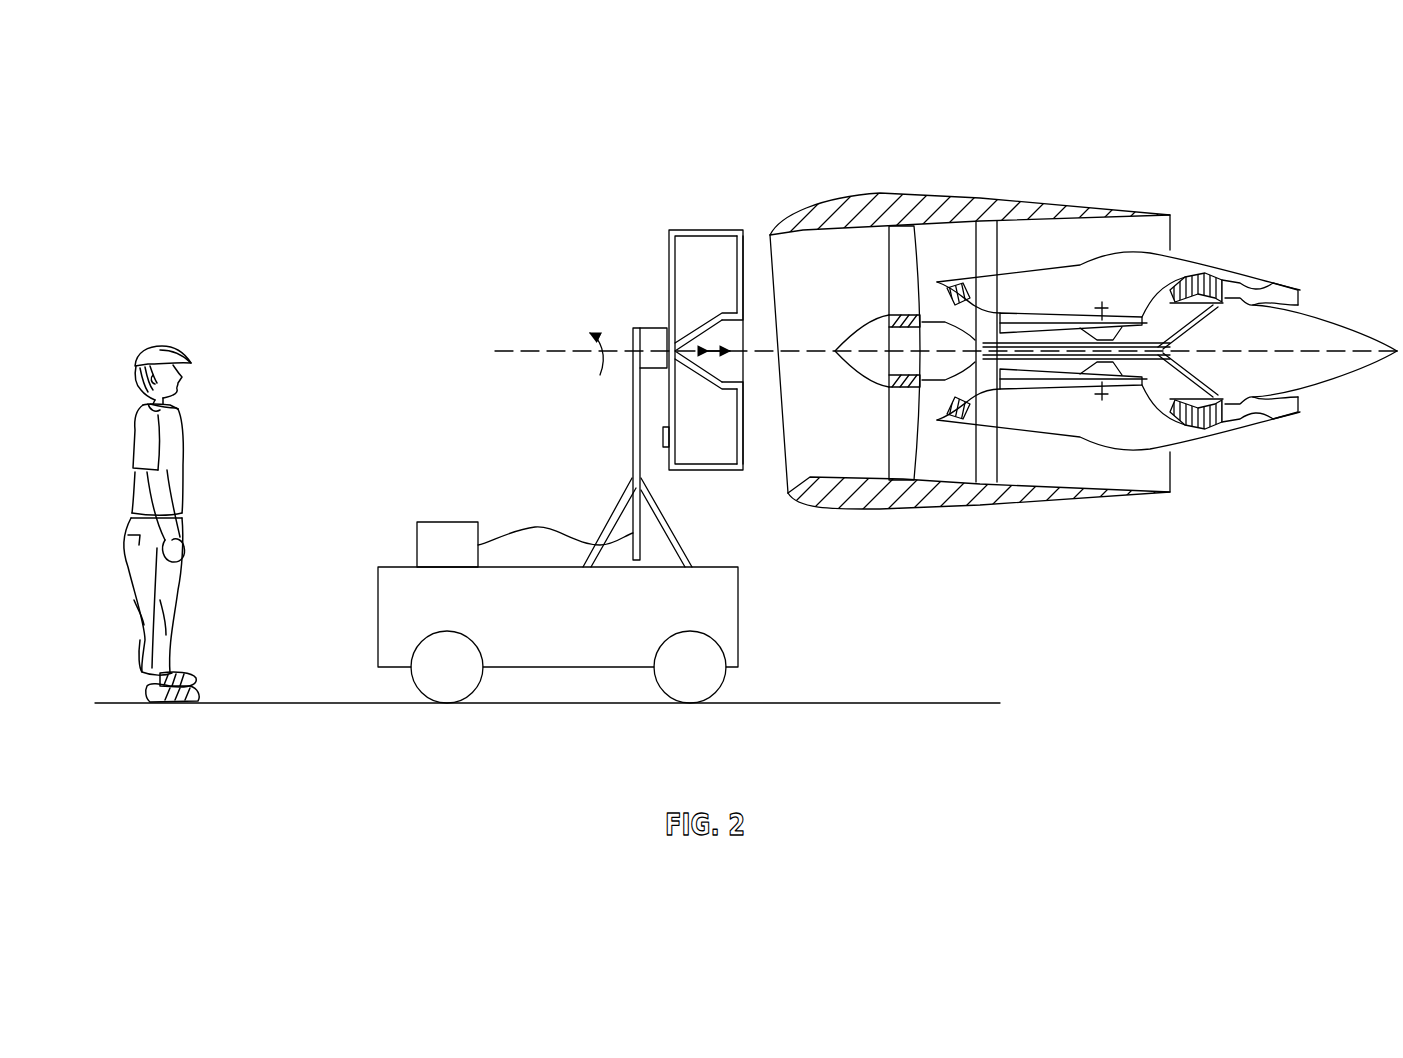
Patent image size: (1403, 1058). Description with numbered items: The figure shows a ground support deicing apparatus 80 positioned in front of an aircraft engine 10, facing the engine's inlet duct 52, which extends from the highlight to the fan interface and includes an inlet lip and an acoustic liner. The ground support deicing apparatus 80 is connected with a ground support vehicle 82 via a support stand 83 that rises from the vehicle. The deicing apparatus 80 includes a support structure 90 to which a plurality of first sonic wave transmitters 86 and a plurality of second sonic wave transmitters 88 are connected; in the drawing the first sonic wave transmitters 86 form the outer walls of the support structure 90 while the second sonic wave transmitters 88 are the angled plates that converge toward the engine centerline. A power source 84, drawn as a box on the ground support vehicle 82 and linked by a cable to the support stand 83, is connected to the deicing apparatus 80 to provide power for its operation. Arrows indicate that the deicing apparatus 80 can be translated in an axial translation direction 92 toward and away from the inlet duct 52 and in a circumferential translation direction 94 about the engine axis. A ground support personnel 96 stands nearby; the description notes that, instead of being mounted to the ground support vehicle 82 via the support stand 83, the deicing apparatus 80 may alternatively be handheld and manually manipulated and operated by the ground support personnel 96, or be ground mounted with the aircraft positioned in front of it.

The gas turbine engine 10 is at (1016, 140).
The inlet duct 52 is at (832, 495).
The ground support deicing apparatus 80 is at (686, 224).
The ground support vehicle 82 is at (390, 637).
The support stand 83 is at (630, 440).
The power source 84 is at (430, 510).
The first sonic wave transmitters 86 is at (737, 254).
The second sonic wave transmitters 88 is at (698, 327).
The support structure 90 is at (664, 239).
The axial translation direction 92 is at (740, 350).
The circumferential translation direction 94 is at (600, 375).
The ground support personnel 96 is at (160, 336).